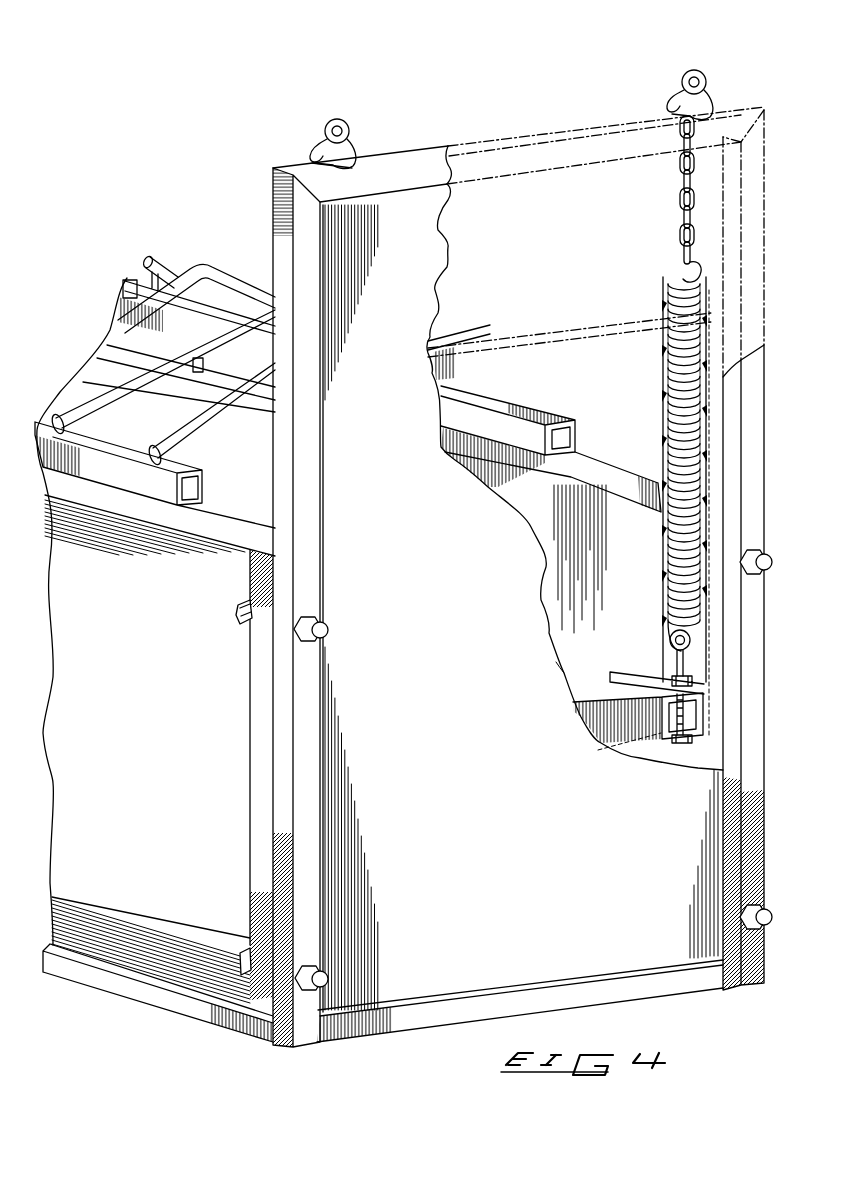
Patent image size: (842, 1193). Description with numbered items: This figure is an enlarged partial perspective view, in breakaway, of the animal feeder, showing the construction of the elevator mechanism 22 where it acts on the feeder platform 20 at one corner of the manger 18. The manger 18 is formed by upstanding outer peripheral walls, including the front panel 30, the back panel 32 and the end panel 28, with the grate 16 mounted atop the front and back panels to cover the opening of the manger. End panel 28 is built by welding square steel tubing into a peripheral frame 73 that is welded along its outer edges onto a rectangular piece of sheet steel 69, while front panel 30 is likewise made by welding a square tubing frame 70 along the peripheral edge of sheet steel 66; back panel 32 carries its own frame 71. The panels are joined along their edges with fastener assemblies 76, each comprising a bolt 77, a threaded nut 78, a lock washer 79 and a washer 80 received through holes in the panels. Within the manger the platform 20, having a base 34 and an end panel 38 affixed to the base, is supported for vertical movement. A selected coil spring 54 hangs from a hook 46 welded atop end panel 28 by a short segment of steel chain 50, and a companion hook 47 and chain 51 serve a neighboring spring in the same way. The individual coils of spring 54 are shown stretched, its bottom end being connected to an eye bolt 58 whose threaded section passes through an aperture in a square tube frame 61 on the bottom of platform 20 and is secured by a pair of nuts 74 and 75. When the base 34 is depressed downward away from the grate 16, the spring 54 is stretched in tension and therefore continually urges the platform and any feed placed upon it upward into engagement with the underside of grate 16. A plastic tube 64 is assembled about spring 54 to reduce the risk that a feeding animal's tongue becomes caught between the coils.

The grate 16 is at (217, 262).
The manger 18 is at (130, 884).
The feeder platform 20 is at (578, 673).
The elevator mechanism 22 is at (646, 498).
The end panel 28 is at (439, 801).
The front panel 30 is at (155, 798).
The back panel 32 is at (612, 557).
The base 34 is at (563, 677).
The end panel of platform 38 is at (484, 338).
The hook 46 is at (696, 68).
The hook 47 is at (337, 118).
The chain 50 is at (671, 224).
The chain 51 is at (313, 158).
The coil spring 54 is at (680, 314).
The eye bolt 58 is at (668, 641).
The square tube frame 61 is at (645, 726).
The plastic tube 64 is at (661, 420).
The sheet steel 66 is at (114, 690).
The sheet steel 69 is at (526, 900).
The square tubing frame 70 is at (152, 512).
The frame 71 is at (539, 468).
The peripheral frame 73 is at (418, 1030).
The nut 74 is at (665, 677).
The nut 75 is at (681, 745).
The fastener assembly 76 is at (337, 620).
The bolt 77 is at (325, 642).
The threaded nut 78 is at (243, 600).
The lock washer 79 is at (303, 605).
The washer 80 is at (235, 620).